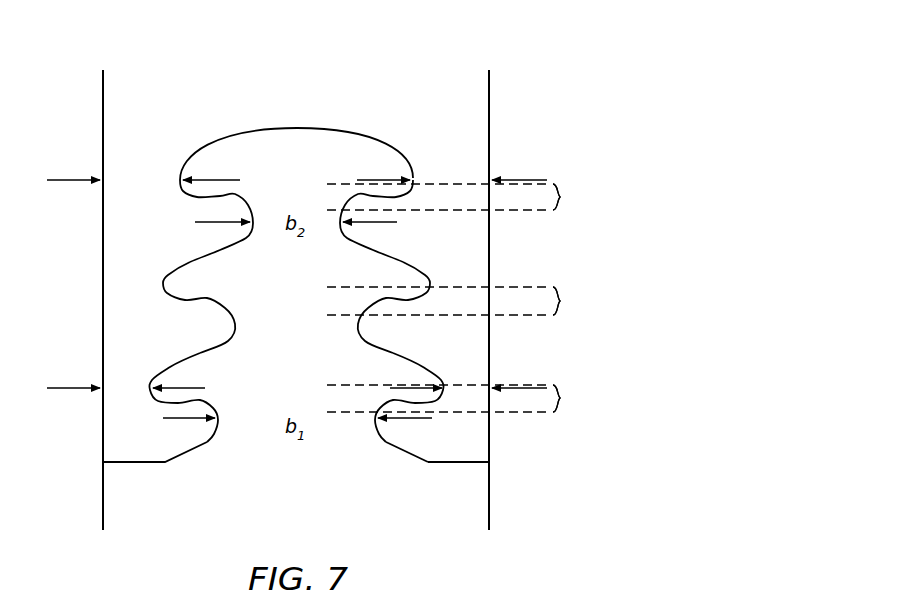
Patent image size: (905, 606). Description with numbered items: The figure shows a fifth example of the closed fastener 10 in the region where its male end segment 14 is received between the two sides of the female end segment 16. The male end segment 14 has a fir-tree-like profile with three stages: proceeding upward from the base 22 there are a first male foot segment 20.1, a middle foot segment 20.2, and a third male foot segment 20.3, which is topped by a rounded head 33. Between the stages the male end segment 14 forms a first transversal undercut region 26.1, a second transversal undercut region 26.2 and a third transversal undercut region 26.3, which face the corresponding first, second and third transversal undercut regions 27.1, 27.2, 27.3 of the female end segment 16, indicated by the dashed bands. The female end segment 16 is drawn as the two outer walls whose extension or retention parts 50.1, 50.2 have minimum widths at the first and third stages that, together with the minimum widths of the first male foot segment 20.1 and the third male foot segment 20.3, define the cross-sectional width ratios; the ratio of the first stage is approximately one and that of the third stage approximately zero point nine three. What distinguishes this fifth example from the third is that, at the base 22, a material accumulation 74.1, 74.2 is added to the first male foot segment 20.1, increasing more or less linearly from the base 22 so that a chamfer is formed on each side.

The fastener 10 is at (655, 48).
The male end segment 14 is at (62, 468).
The female end segment 16 is at (532, 121).
The base 22 is at (456, 459).
The head portion 33 is at (296, 124).
The extension segment 50.1 is at (473, 255).
The extension segment 50.2 is at (122, 278).
The first male foot segment 20.1 is at (243, 440).
The second fold 20.2 is at (260, 322).
The third male foot segment 20.3 is at (265, 205).
The material accumulation 74.1 is at (185, 452).
The material accumulation 74.2 is at (408, 452).
The first transversal undercut region 26.1 is at (471, 398).
The second transversal undercut region 26.2 is at (471, 301).
The third transversal undercut region 26.3 is at (471, 197).
The first transversal undercut region 27.1 is at (607, 197).
The second transversal undercut region 27.2 is at (607, 301).
The third transversal undercut region 27.3 is at (607, 398).